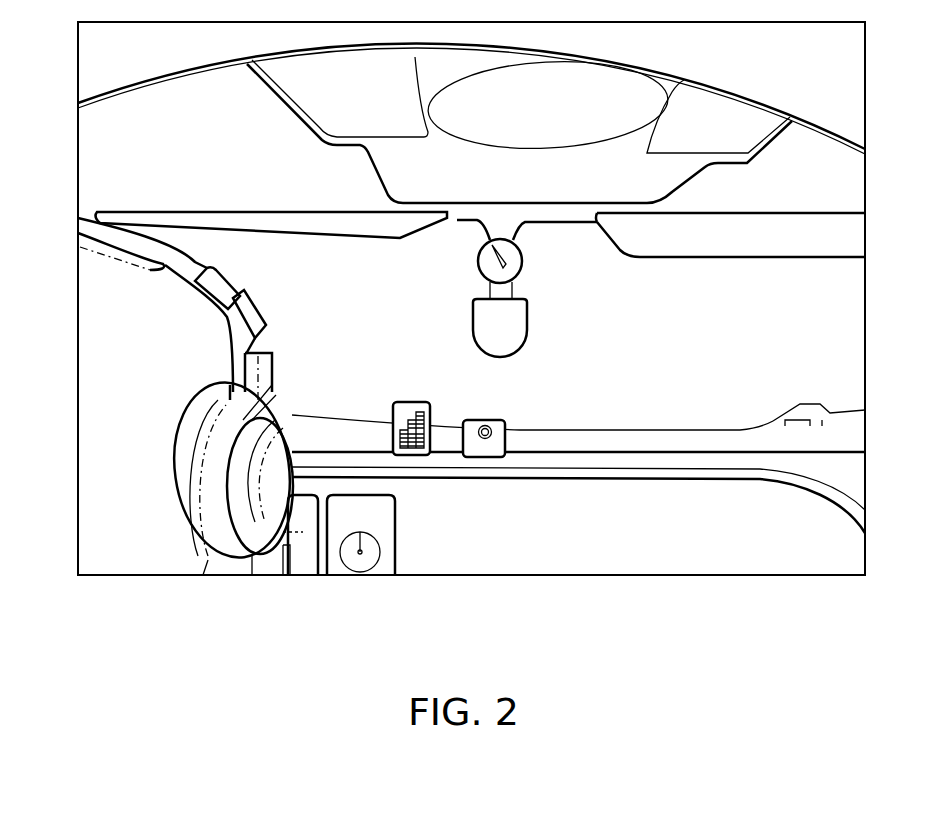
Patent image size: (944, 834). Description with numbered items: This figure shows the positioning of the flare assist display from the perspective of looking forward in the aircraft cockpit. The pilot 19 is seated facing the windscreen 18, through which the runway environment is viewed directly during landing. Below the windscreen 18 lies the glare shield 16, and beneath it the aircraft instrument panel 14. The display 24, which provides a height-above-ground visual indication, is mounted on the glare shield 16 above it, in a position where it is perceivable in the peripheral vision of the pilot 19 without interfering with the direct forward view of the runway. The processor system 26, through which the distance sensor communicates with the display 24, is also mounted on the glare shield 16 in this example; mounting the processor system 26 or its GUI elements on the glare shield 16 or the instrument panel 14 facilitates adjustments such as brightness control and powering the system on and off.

The instrument panel 14 is at (333, 533).
The glare shield 16 is at (502, 482).
The windscreen 18 is at (615, 393).
The pilot 19 is at (130, 432).
The display 24 is at (417, 455).
The processor system 26 is at (475, 448).